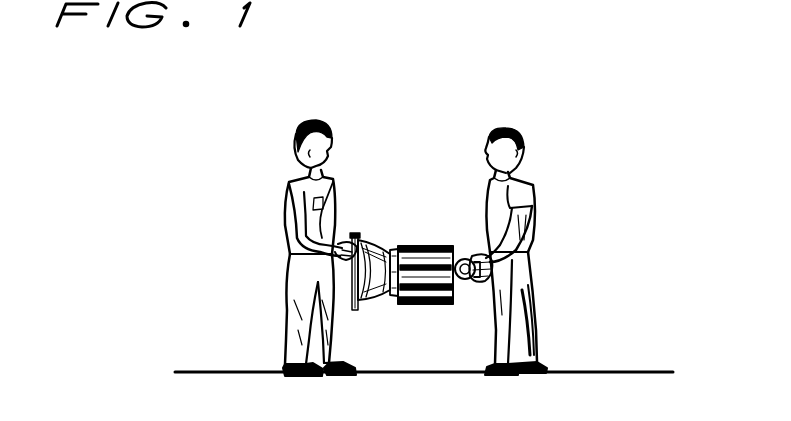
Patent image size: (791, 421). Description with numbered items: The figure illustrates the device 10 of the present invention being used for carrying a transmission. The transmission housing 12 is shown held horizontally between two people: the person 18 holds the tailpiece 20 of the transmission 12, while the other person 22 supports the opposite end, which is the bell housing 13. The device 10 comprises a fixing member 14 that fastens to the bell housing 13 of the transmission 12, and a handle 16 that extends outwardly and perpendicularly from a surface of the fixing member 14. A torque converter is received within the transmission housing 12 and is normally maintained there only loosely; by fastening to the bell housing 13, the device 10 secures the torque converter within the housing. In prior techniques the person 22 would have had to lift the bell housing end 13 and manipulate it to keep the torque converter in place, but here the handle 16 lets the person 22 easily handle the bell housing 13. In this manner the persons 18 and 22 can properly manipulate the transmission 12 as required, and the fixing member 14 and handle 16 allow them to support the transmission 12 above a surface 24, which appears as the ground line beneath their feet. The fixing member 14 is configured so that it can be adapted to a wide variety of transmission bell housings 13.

The device 10 is at (356, 236).
The transmission housing 12 is at (430, 246).
The bell housing 13 is at (368, 238).
The fixing member 14 is at (353, 311).
The handle 16 is at (292, 288).
The person 18 is at (537, 203).
The tailpiece 20 is at (466, 282).
The other person 22 is at (288, 198).
The surface 24 is at (635, 372).